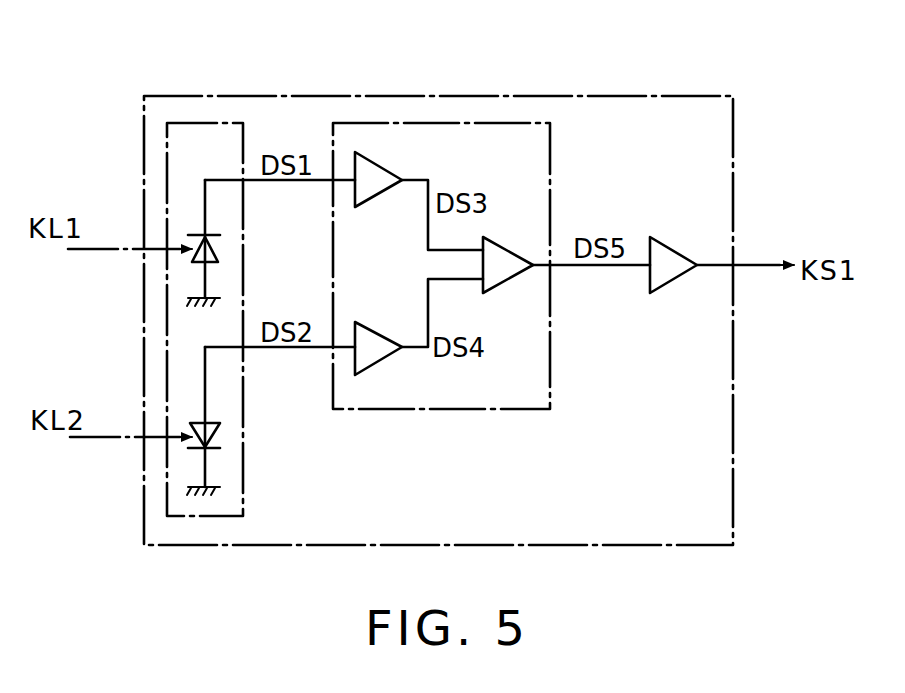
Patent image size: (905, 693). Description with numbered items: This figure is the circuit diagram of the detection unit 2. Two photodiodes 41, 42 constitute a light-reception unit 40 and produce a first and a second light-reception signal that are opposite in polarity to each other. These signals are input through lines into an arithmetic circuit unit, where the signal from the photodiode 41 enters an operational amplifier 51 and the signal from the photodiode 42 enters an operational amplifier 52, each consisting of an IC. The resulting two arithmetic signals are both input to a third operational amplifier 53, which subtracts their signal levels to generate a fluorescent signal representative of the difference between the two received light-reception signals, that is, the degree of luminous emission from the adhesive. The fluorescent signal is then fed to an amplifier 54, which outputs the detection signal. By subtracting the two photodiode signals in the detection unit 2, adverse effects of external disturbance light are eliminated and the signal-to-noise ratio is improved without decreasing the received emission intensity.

The detection unit 2 is at (438, 96).
The light-reception unit 40 is at (188, 120).
The photodiode 41 is at (220, 247).
The photodiode 42 is at (220, 433).
The operational amplifier 51 is at (371, 206).
The operational amplifier 52 is at (375, 322).
The operational amplifier 53 is at (505, 283).
The amplifier 54 is at (668, 283).